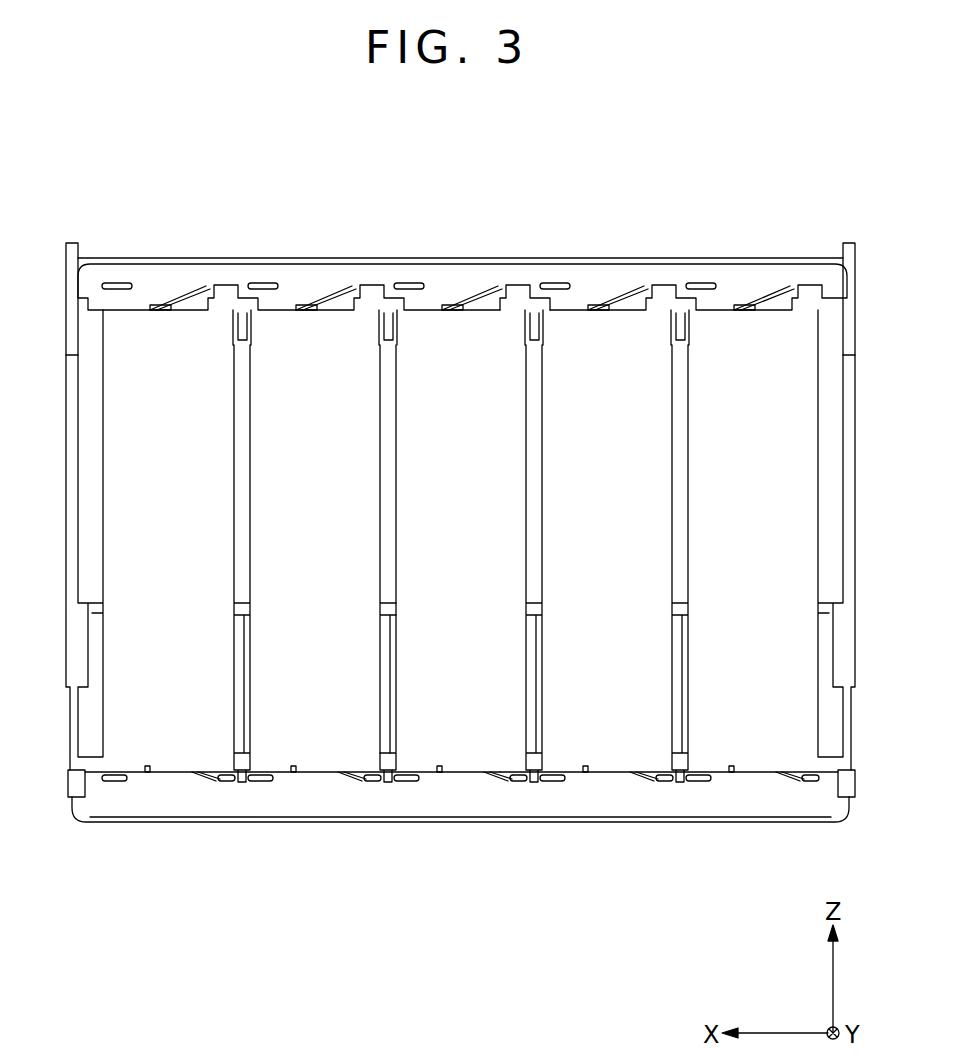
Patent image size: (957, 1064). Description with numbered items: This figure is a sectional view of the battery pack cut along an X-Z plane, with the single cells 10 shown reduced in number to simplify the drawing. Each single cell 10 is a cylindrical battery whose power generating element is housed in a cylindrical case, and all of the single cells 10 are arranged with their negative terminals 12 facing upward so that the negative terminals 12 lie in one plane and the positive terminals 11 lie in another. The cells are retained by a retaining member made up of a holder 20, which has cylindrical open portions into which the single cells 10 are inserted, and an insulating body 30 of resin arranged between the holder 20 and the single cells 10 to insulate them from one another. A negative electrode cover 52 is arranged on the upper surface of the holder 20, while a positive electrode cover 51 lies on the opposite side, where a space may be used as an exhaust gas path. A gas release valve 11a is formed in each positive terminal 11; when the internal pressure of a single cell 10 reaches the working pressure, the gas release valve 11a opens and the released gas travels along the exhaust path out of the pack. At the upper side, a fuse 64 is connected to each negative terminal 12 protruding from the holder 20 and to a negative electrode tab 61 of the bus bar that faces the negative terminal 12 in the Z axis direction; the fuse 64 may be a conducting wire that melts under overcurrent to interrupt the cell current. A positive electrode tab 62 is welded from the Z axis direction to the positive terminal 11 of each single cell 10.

The single cell 10 is at (461, 528).
The positive terminal 11 is at (463, 773).
The gas release valve 11a is at (438, 772).
The negative terminal 12 is at (437, 306).
The holder 20 is at (390, 703).
The insulating body 30 is at (397, 717).
The positive electrode cover 51 is at (372, 823).
The negative electrode cover 52 is at (375, 258).
The negative electrode tab 61 is at (512, 290).
The positive electrode tab 62 is at (492, 776).
The fuse 64 is at (480, 294).